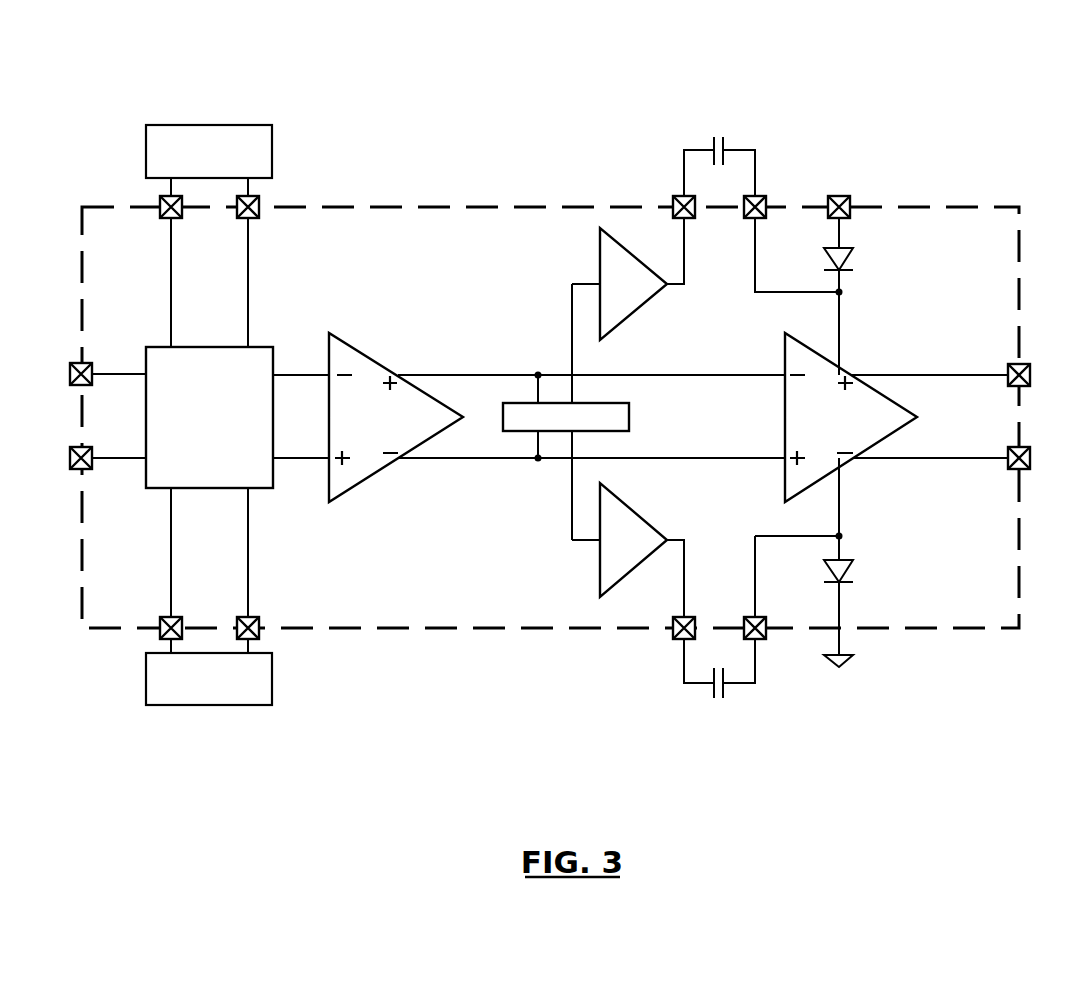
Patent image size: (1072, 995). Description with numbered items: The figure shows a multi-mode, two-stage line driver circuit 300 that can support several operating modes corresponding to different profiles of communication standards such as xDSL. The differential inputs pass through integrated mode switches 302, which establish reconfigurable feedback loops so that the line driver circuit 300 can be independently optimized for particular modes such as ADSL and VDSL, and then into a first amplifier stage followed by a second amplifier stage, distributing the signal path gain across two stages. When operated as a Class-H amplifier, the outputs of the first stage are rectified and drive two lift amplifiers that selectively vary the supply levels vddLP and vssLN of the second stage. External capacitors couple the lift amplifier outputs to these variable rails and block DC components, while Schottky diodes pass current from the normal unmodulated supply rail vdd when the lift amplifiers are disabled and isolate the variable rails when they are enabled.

The line driver circuit 300 is at (973, 34).
The mode switches 302 is at (192, 450).
The unmodulated supply rail vdd is at (832, 195).
The variable positive voltage supply level vddLP is at (829, 296).
The variable negative voltage supply level vssLN is at (828, 562).